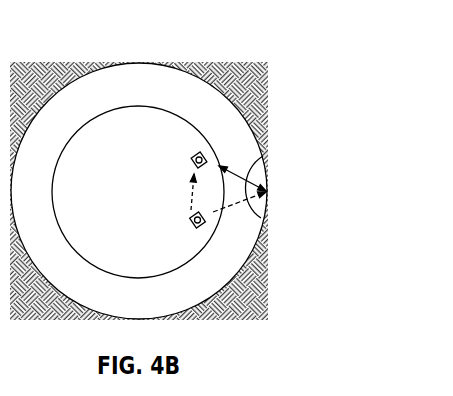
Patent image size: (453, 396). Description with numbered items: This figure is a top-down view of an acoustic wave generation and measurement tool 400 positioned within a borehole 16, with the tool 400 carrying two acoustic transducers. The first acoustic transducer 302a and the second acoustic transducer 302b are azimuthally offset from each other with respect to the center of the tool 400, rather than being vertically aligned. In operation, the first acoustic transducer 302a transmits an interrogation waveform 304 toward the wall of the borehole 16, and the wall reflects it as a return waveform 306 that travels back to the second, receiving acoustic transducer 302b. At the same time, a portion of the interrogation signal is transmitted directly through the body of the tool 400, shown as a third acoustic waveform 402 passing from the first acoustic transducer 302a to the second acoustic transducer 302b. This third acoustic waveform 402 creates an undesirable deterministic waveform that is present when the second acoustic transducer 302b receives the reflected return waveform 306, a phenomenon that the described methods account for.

The acoustic wave generation and measurement tool 400 is at (91, 52).
The borehole 16 is at (268, 196).
The first acoustic transducer 302a is at (190, 226).
The second acoustic transducer 302b is at (192, 156).
The third acoustic waveform 402 is at (190, 196).
The return waveform 306 is at (263, 157).
The interrogation waveform 304 is at (261, 218).